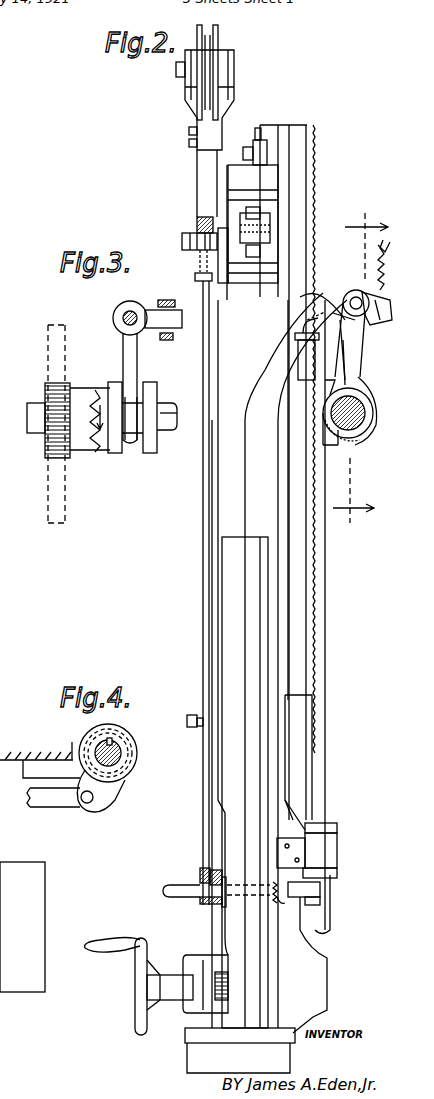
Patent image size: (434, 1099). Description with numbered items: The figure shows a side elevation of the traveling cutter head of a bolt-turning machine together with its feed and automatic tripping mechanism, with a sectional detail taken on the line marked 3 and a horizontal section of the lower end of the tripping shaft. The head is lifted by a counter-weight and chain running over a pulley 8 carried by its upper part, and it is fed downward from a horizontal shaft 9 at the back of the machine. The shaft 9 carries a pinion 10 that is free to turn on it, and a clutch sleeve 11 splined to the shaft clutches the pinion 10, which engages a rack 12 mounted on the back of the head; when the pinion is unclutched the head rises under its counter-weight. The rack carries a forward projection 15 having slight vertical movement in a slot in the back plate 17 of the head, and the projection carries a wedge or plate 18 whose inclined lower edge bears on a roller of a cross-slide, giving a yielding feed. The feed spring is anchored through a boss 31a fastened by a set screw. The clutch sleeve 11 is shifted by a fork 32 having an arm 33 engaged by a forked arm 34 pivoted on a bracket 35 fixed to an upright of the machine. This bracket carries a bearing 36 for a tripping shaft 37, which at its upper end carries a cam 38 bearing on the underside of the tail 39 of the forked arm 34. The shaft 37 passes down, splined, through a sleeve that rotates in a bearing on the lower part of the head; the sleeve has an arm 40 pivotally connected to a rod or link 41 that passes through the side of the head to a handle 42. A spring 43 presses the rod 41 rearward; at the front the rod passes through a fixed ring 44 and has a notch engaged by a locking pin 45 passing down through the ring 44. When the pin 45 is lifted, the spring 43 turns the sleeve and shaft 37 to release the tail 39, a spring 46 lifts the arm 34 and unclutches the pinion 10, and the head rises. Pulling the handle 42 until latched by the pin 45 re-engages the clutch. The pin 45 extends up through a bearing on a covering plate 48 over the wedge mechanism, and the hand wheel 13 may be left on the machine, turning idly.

In FIG. 2, the pulley 8 is at (220, 40).
In FIG. 2, the shaft 9 is at (360, 423).
In FIG. 3, the shaft 9 is at (27, 418).
In FIG. 2, the pinion 10 is at (357, 443).
In FIG. 3, the pinion 10 is at (45, 452).
In FIG. 3, the clutch sleeve 11 is at (103, 453).
In FIG. 2, the rack 12 is at (315, 203).
In FIG. 3, the rack 12 is at (68, 497).
In FIG. 2, the hand wheel 13 is at (143, 937).
In FIG. 2, the forward projection 15 is at (273, 122).
In FIG. 2, the back plate 17 is at (285, 172).
In FIG. 2, the wedge or plate 18 is at (250, 147).
In FIG. 2, the boss 31a is at (203, 710).
In FIG. 2, the fork 32 is at (360, 367).
In FIG. 3, the fork 32 is at (125, 358).
In FIG. 2, the arm 33 is at (375, 333).
In FIG. 3, the arm 33 is at (152, 310).
In FIG. 2, the forked arm 34 is at (349, 350).
In FIG. 3, the forked arm 34 is at (167, 340).
In FIG. 2, the bracket 35 is at (342, 290).
In FIG. 2, the bearing 36 is at (303, 373).
In FIG. 2, the shaft 37 is at (312, 450).
In FIG. 4, the shaft 37 is at (117, 747).
In FIG. 2, the cam 38 is at (307, 323).
In FIG. 4, the cam 38 is at (132, 770).
In FIG. 2, the tail 39 is at (323, 297).
In FIG. 4, the tail 39 is at (137, 742).
In FIG. 2, the arm 40 is at (327, 875).
In FIG. 4, the arm 40 is at (102, 797).
In FIG. 2, the rod or link 41 is at (297, 890).
In FIG. 4, the rod or link 41 is at (60, 803).
In FIG. 2, the handle 42 is at (180, 888).
In FIG. 2, the spring 43 is at (284, 907).
In FIG. 2, the fixed ring 44 is at (210, 905).
In FIG. 2, the locking pin 45 is at (203, 833).
In FIG. 2, the spring 46 is at (378, 252).
In FIG. 2, the covering plate 48 is at (232, 178).
In FIG. 2, the socket 3 is at (360, 371).